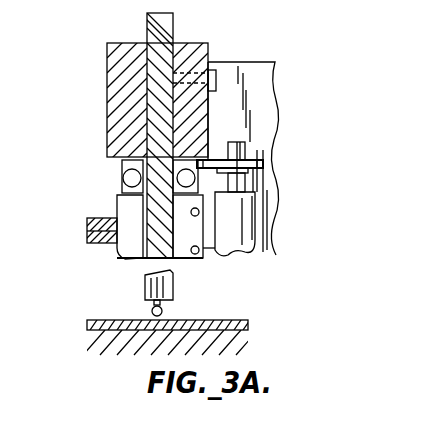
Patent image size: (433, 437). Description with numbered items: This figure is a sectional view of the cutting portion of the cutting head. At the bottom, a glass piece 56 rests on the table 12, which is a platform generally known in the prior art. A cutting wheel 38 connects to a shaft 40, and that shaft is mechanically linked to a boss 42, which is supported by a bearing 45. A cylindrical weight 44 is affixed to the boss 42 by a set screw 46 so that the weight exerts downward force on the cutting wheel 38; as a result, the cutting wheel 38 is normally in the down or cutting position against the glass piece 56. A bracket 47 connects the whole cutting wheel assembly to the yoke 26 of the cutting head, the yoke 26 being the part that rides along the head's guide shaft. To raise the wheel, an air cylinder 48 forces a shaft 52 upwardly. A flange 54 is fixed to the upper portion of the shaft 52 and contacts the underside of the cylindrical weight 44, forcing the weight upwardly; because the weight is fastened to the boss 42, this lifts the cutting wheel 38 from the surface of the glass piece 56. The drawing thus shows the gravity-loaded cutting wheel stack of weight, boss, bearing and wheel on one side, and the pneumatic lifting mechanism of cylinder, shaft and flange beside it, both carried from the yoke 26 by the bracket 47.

The table 12 is at (248, 340).
The yoke 26 is at (256, 82).
The cutting wheel 38 is at (164, 311).
The shaft 40 is at (145, 288).
The boss 42 is at (173, 21).
The cylindrical weight 44 is at (107, 117).
The bearing 45 is at (123, 181).
The set screw 46 is at (216, 76).
The bracket 47 is at (122, 238).
The air cylinder 48 is at (242, 223).
The shaft 52 is at (257, 183).
The flange 54 is at (250, 153).
The glass piece 56 is at (257, 309).